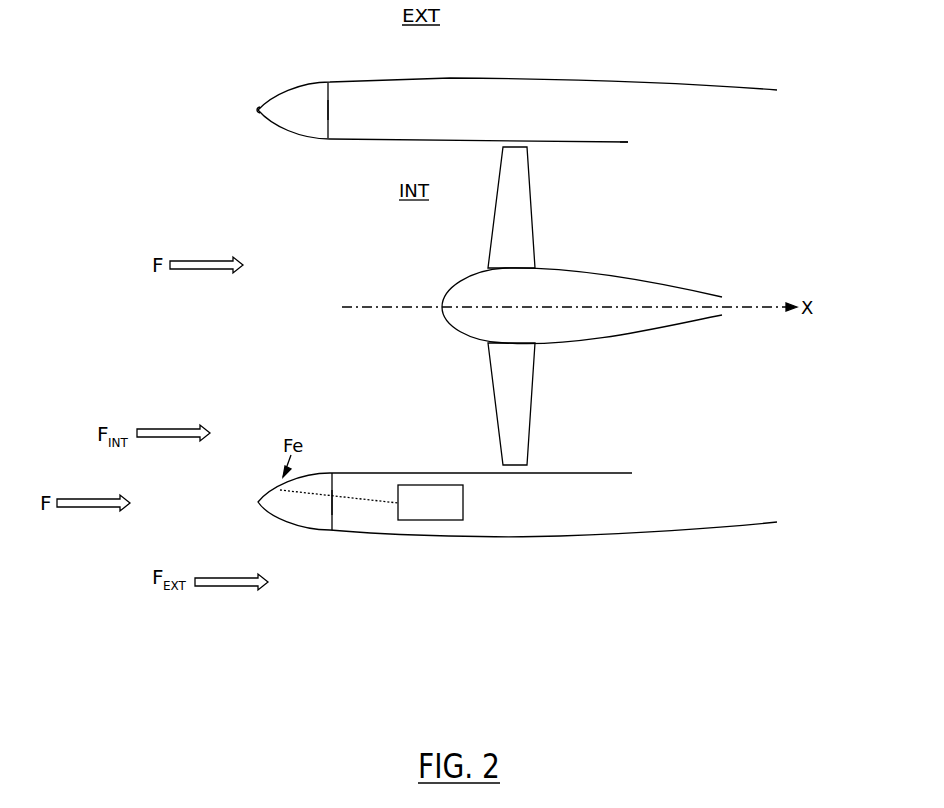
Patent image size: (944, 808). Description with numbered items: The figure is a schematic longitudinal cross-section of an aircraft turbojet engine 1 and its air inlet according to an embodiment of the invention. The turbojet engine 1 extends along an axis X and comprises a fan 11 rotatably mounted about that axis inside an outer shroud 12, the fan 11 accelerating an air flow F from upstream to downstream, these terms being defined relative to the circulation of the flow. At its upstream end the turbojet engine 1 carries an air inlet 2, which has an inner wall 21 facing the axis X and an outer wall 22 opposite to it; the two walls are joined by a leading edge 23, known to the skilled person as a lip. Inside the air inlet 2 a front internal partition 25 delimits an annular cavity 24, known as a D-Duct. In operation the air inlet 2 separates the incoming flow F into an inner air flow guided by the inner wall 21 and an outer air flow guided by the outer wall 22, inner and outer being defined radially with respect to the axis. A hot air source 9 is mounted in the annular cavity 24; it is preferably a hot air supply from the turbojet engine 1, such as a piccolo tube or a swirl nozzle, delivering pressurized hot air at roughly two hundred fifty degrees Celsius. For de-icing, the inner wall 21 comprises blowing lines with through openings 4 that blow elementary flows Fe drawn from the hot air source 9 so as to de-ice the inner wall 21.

The turbojet engine 1 is at (760, 176).
The air inlet 2 is at (214, 76).
The through openings 4 is at (282, 481).
The hot air source 9 is at (430, 502).
The fan 11 is at (510, 212).
The outer shroud 12 is at (628, 142).
The inner wall 21 is at (297, 137).
The outer wall 22 is at (297, 84).
The leading edge 23 is at (258, 107).
The annular cavity 24 is at (317, 121).
The front internal partition 25 is at (333, 125).